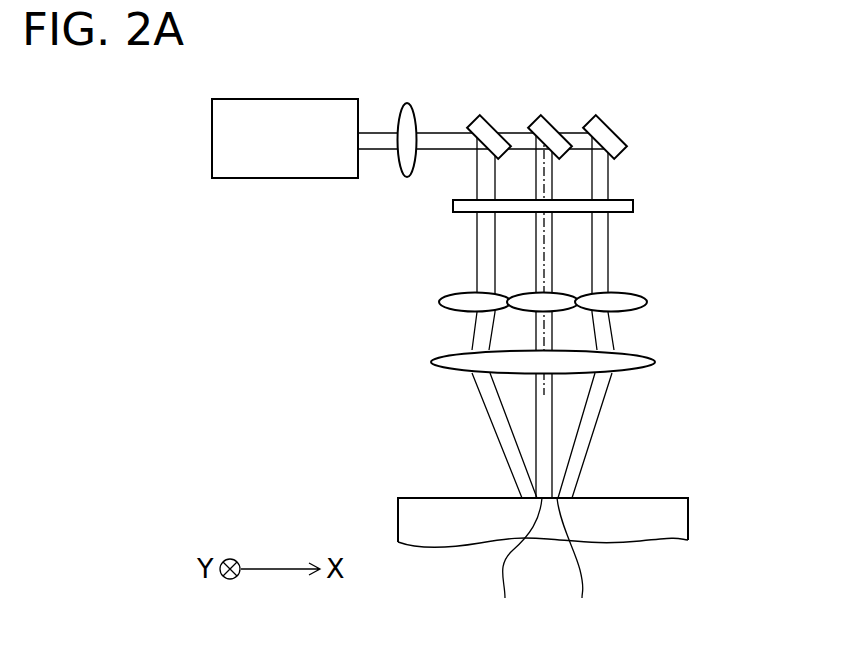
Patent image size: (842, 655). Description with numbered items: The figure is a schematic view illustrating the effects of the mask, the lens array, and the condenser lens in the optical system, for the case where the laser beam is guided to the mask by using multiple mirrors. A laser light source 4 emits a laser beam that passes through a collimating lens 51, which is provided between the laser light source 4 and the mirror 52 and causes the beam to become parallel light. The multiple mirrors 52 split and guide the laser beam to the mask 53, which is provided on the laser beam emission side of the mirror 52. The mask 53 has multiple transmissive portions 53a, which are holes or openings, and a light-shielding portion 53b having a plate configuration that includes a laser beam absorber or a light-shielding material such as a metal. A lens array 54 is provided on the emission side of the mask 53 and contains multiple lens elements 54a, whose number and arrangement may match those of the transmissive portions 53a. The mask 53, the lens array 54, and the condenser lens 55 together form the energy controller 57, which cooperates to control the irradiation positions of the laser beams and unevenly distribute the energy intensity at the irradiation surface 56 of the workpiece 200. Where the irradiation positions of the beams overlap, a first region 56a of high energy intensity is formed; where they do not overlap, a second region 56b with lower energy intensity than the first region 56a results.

The laser light source 4 is at (212, 128).
The collimating lens 51 is at (396, 118).
The mirror 52 is at (596, 130).
The mask 53 is at (746, 100).
The transmissive portion 53a is at (611, 197).
The light-shielding portion 53b is at (625, 198).
The lens array 54 is at (652, 298).
The lens element 54a is at (620, 292).
The condenser lens 55 is at (632, 360).
The irradiation surface 56 is at (572, 497).
The first region 56a is at (511, 566).
The second region 56b is at (580, 566).
The energy controller 57 is at (418, 278).
The workpiece 200 is at (628, 520).